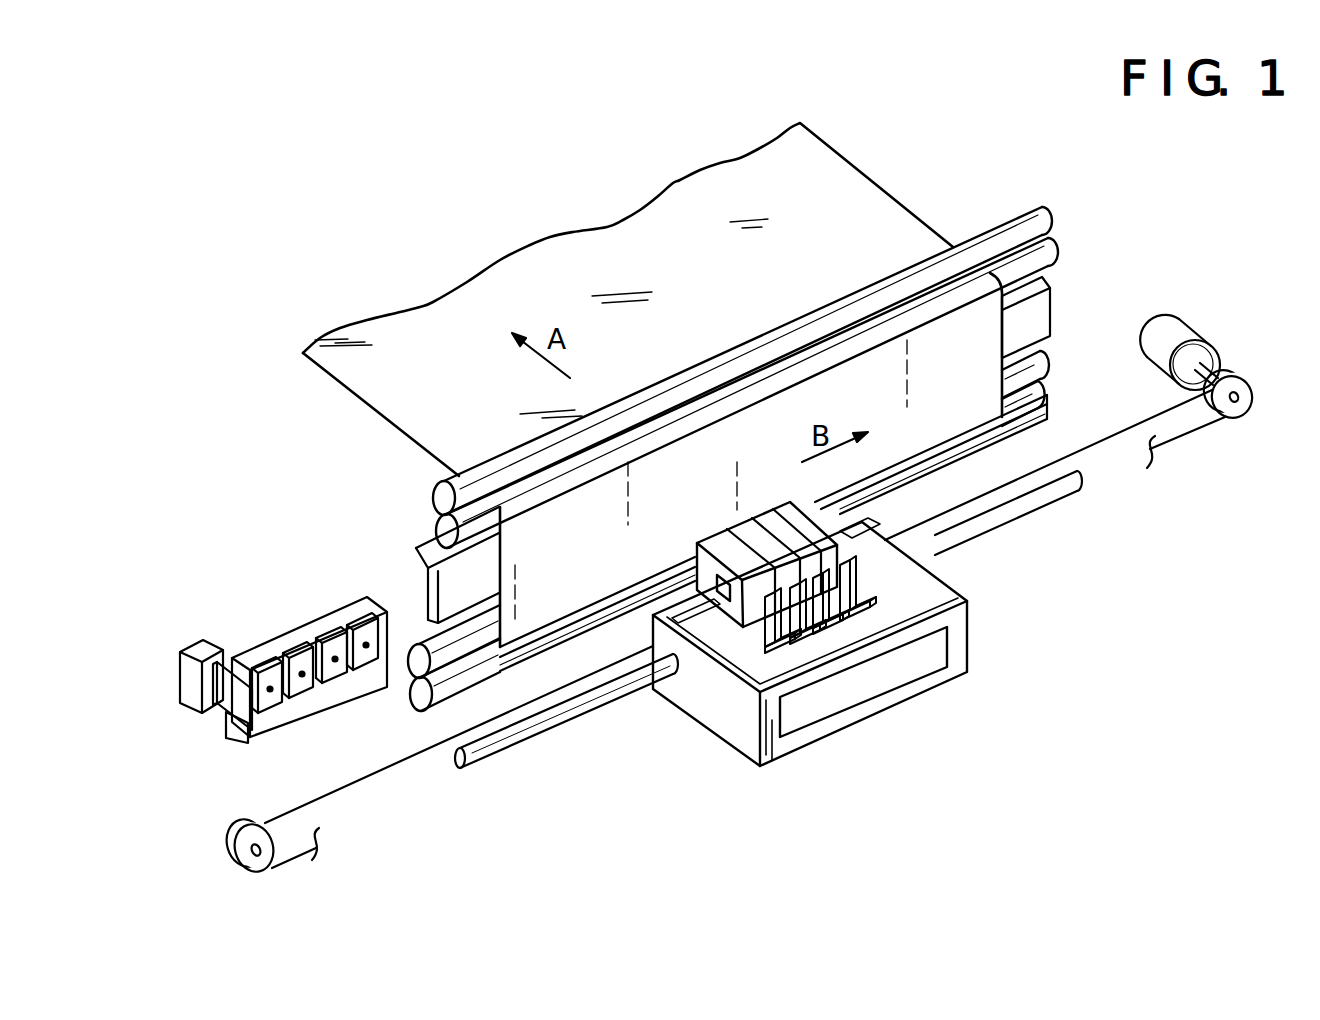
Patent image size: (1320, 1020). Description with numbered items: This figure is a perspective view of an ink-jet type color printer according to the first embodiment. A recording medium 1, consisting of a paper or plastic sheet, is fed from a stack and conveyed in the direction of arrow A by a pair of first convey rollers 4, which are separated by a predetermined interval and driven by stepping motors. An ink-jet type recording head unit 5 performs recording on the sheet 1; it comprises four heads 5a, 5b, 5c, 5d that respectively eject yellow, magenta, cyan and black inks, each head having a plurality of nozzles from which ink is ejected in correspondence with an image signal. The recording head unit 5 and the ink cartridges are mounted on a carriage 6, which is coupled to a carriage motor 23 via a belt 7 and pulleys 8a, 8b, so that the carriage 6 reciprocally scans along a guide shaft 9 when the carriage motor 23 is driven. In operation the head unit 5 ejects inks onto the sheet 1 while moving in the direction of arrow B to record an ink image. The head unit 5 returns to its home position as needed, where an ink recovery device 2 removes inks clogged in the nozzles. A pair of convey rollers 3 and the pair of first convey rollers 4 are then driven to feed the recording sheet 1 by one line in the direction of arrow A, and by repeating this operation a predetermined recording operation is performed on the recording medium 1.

The recording medium 1 is at (837, 177).
The ink recovery device 2 is at (297, 650).
The pair of convey rollers 3 is at (1042, 396).
The pair of first convey rollers 4 is at (1052, 244).
The ink-jet type recording head unit 5 is at (763, 553).
The head 5a is at (713, 541).
The head 5b is at (735, 521).
The head 5c is at (760, 511).
The head 5d is at (781, 504).
The carriage 6 is at (913, 590).
The belt 7 is at (392, 769).
The pulley 8a is at (1233, 418).
The pulley 8b is at (250, 872).
The guide shaft 9 is at (567, 722).
The carriage motor 23 is at (1188, 323).